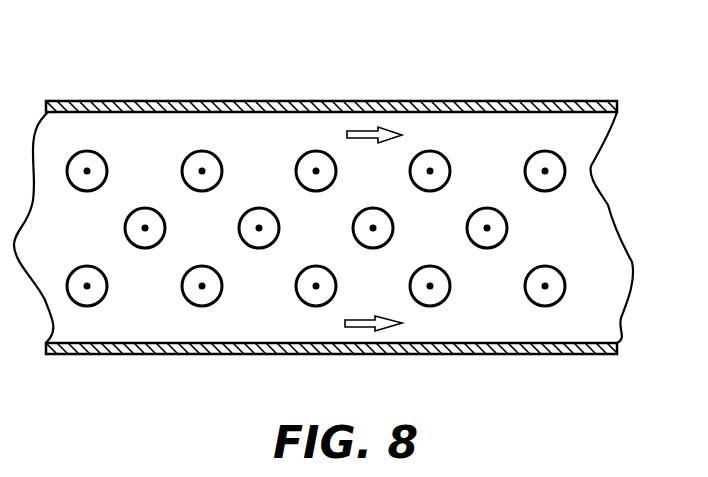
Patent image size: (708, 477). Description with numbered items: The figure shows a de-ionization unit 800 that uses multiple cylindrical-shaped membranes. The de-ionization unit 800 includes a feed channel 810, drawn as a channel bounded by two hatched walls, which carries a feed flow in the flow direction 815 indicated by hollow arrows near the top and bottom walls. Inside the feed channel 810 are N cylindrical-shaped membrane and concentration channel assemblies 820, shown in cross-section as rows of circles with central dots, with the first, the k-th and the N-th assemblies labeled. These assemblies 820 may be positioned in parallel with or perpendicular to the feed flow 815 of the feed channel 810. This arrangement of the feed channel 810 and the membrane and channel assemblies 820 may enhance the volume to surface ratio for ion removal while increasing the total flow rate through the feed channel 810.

The de-ionization unit 800 is at (568, 48).
The feed channel 810 is at (607, 207).
The flow direction 815 is at (362, 130).
The cylindrical-shaped membrane and concentration channel assembly 820 is at (84, 174).